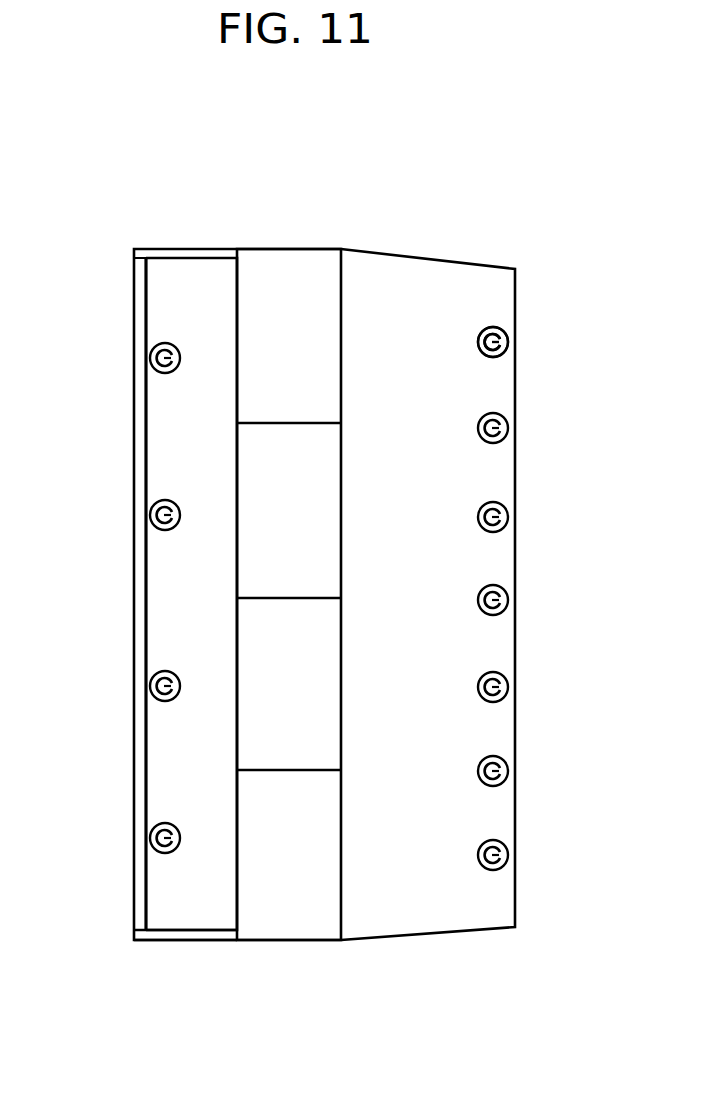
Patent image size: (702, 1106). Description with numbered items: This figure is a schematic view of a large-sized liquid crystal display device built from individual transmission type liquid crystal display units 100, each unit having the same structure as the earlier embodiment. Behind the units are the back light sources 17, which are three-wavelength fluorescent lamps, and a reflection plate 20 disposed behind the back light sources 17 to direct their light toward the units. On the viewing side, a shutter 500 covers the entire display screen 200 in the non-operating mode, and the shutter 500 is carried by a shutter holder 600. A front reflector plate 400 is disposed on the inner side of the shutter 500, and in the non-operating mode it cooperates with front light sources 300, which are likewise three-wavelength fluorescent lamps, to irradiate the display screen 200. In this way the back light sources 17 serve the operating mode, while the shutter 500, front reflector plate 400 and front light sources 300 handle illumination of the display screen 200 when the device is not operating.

The back light source 17 is at (477, 342).
The reflection plate 20 is at (518, 458).
The transmission type liquid crystal display unit 100 is at (312, 280).
The display screen 200 is at (238, 278).
The front light source 300 is at (149, 347).
The front reflector plate 400 is at (147, 453).
The shutter 500 is at (134, 556).
The shutter holder 600 is at (190, 942).